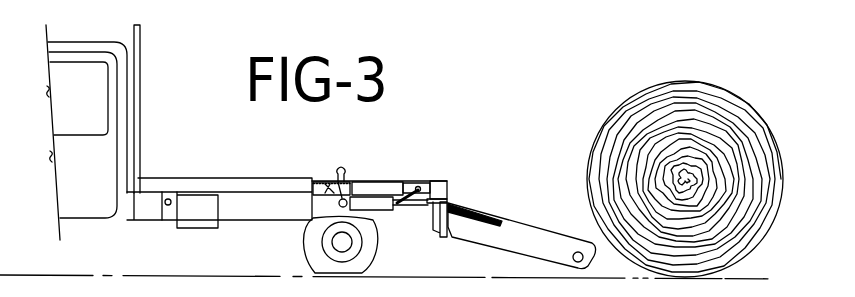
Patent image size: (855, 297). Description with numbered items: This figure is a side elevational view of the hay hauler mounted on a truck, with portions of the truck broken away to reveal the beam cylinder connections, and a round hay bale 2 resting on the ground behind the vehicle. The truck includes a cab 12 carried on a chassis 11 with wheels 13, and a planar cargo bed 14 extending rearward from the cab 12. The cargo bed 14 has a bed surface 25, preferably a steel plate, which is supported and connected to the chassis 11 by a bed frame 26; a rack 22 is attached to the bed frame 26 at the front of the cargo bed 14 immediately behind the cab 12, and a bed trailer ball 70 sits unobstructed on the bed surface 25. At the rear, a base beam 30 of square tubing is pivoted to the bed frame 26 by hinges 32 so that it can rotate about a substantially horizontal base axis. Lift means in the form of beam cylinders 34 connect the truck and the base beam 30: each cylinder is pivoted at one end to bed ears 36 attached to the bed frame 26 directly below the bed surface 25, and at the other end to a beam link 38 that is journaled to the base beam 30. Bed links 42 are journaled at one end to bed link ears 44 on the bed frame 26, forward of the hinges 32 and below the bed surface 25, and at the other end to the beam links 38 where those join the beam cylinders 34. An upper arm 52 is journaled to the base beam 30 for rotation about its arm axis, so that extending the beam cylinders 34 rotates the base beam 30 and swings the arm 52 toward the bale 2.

The bale 2 is at (604, 124).
The chassis 11 is at (230, 218).
The cab 12 is at (98, 46).
The wheels 13 is at (380, 253).
The cargo bed 14 is at (163, 165).
The rack 22 is at (141, 32).
The bed surface 25 is at (310, 180).
The bed frame 26 is at (192, 182).
The base beam 30 is at (448, 190).
The hinges 32 is at (435, 180).
The beam cylinders 34 is at (388, 212).
The bed ears 36 is at (330, 181).
The beam links 38 is at (423, 208).
The bed links 42 is at (405, 182).
The bed link ears 44 is at (417, 181).
The upper arm 52 is at (548, 247).
The bed trailer ball 70 is at (345, 168).